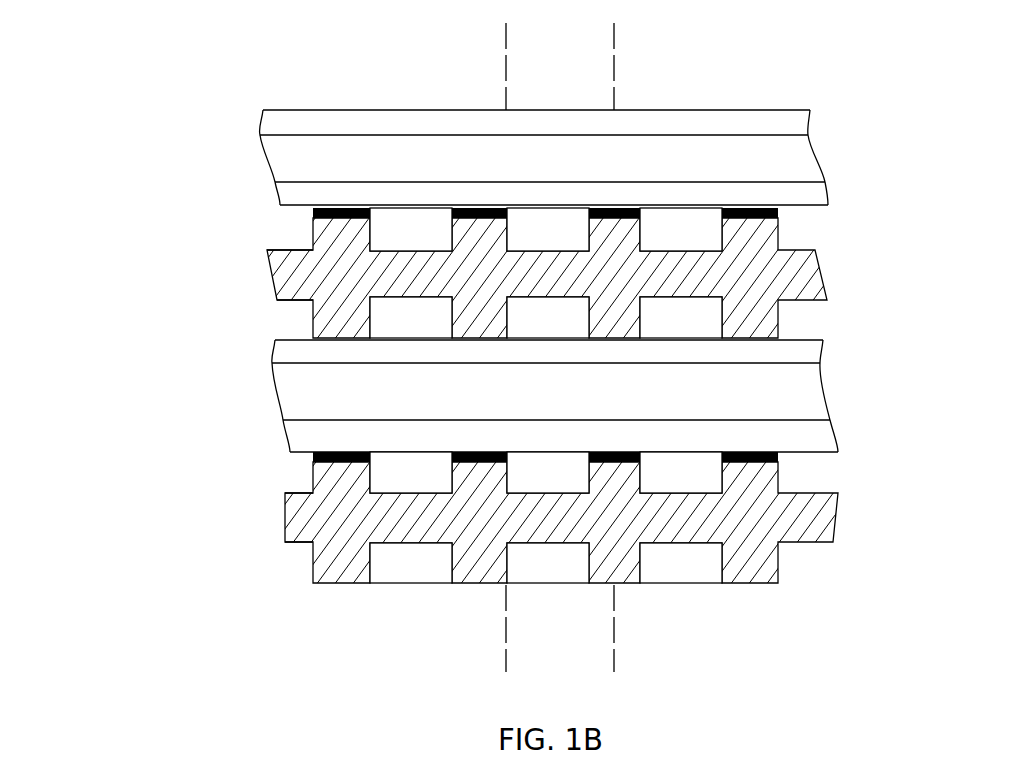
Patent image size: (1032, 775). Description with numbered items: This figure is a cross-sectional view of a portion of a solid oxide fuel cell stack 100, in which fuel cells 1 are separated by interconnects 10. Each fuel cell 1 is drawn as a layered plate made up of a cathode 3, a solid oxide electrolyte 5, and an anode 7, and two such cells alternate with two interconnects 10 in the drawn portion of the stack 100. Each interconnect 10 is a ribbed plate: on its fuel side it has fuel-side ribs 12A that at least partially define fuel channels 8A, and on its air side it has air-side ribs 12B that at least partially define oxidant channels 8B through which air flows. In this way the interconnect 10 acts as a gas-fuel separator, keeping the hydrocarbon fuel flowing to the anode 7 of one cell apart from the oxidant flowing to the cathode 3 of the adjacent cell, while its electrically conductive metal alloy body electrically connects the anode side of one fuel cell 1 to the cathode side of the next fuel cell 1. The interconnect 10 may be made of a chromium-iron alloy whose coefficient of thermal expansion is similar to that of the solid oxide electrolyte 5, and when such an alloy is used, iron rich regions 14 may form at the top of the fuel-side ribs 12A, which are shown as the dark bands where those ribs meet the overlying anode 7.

The fuel cell stack 100 is at (138, 220).
The fuel cell 1 is at (848, 108).
The cathode 3 is at (263, 122).
The solid oxide electrolyte 5 is at (262, 160).
The anode 7 is at (280, 198).
The interconnect 10 is at (848, 228).
The fuel-side ribs 12A is at (313, 234).
The air-side ribs 12B is at (313, 318).
The fuel channels 8A is at (695, 486).
The oxidant channels 8B is at (695, 577).
The iron rich regions 14 is at (780, 212).